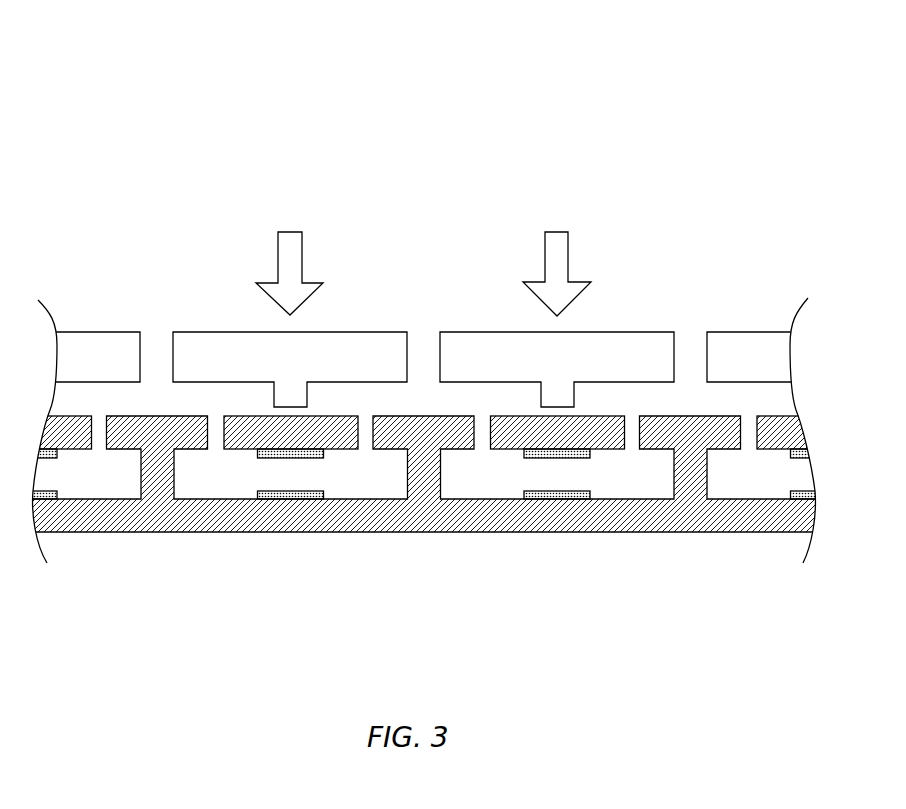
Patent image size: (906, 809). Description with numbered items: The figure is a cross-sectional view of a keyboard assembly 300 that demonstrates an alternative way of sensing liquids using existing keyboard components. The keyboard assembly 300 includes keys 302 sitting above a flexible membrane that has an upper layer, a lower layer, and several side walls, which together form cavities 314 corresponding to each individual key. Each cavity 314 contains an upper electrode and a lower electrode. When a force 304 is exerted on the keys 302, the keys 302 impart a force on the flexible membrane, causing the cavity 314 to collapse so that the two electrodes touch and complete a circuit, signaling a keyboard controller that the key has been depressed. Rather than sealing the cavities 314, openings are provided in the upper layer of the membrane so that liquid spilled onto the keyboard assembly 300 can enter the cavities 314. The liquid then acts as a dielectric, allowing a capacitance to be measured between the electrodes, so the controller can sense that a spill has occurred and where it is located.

The keyboard assembly 300 is at (185, 80).
The keys 302 is at (215, 332).
The force 304 is at (290, 232).
The cavities 314 is at (632, 473).